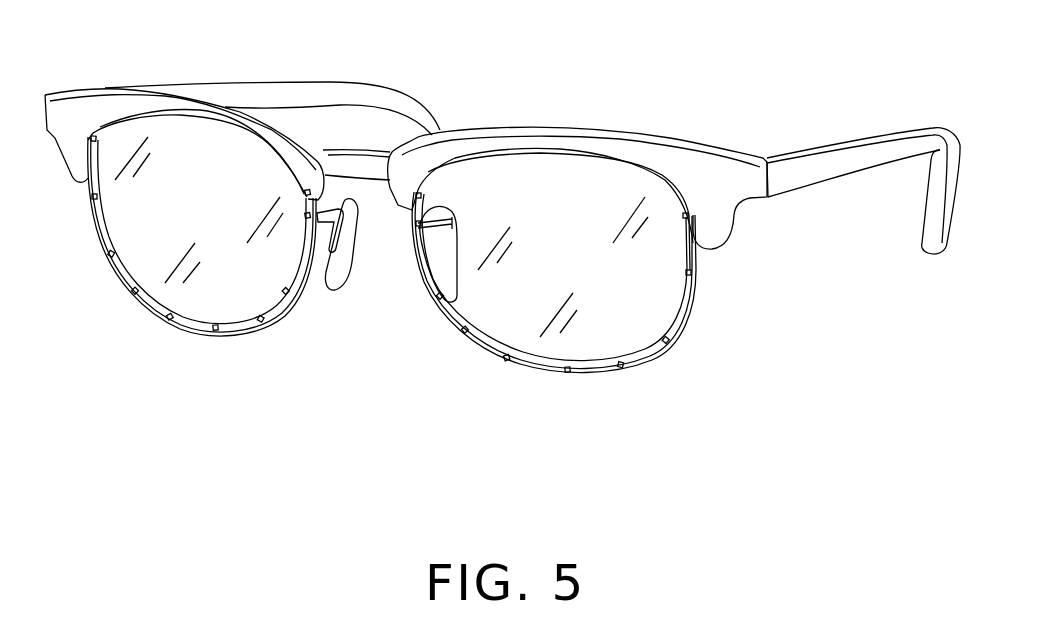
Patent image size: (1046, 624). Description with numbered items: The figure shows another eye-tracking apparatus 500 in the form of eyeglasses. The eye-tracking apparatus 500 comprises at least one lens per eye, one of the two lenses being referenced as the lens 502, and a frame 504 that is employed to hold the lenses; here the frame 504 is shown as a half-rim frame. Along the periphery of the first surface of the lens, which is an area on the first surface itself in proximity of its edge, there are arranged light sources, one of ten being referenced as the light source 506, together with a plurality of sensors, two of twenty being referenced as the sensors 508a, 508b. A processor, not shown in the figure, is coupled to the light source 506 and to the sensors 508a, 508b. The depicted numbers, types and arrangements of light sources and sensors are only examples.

The eye-tracking apparatus 500 is at (502, 228).
The lens 502 is at (485, 288).
The frame 504 is at (800, 170).
The light source 506 is at (696, 273).
The sensor 508a is at (691, 266).
The sensor 508b is at (695, 295).